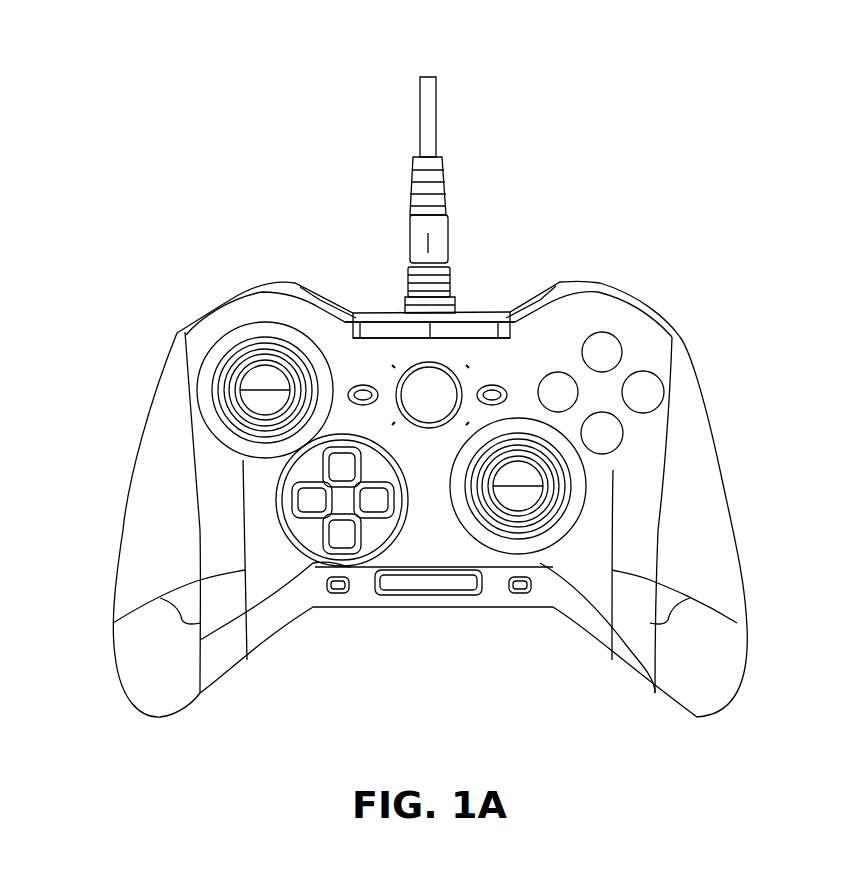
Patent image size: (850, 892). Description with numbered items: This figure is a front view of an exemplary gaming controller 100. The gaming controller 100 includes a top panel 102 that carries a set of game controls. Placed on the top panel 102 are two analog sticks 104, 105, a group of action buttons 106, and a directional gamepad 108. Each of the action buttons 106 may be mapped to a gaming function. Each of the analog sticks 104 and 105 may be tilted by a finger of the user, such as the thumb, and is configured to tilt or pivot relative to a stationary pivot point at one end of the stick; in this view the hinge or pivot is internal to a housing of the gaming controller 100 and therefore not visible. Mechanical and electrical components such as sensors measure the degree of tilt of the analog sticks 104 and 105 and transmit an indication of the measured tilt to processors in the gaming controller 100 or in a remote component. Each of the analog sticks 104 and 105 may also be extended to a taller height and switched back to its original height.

The gaming controller 100 is at (82, 66).
The top panel 102 is at (730, 558).
The analog stick 104 is at (263, 398).
The analog stick 105 is at (540, 498).
The action buttons 106 is at (655, 383).
The directional gamepads 108 is at (340, 527).